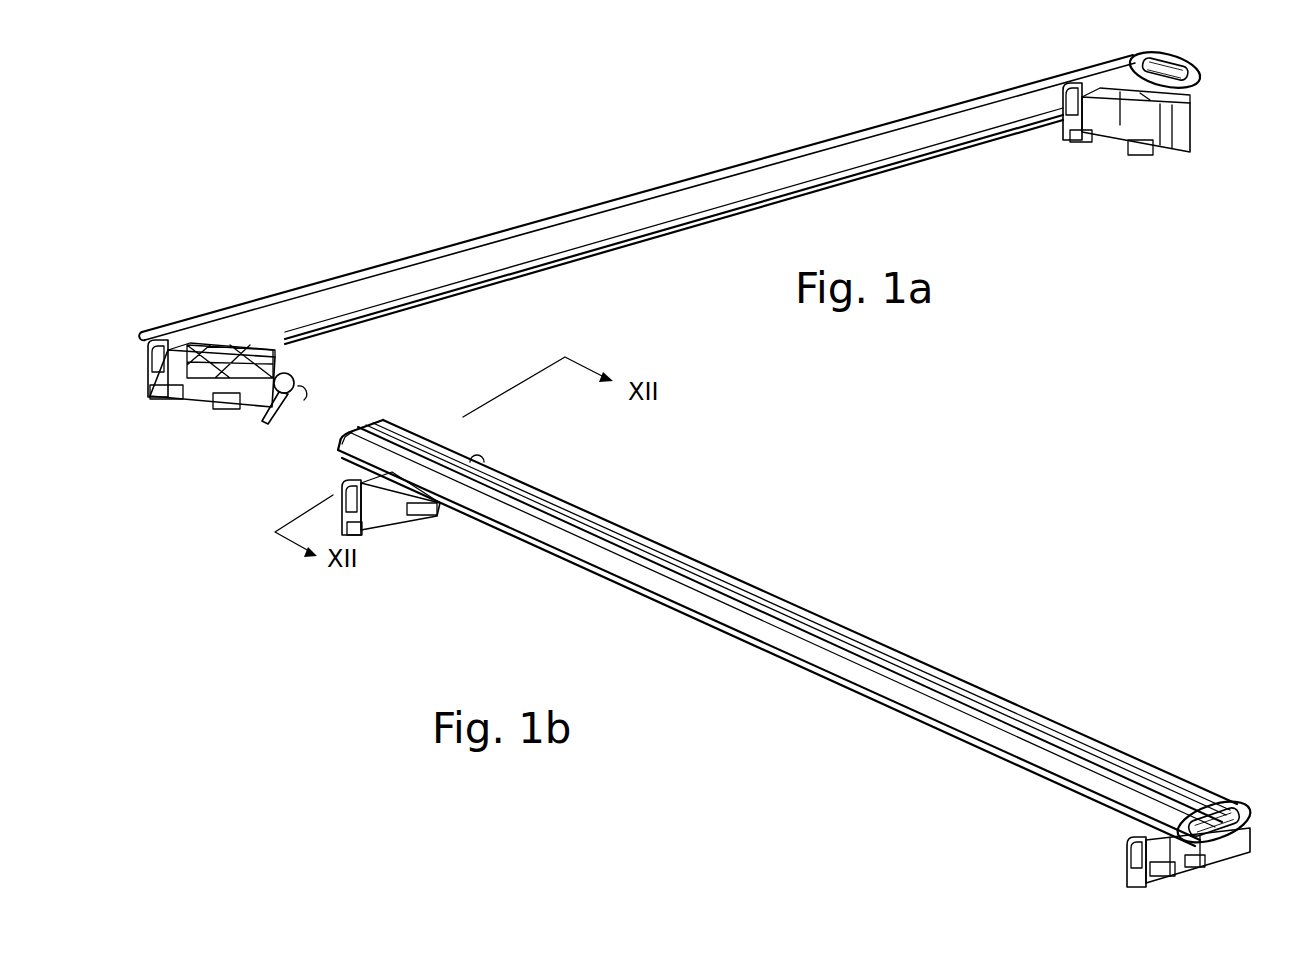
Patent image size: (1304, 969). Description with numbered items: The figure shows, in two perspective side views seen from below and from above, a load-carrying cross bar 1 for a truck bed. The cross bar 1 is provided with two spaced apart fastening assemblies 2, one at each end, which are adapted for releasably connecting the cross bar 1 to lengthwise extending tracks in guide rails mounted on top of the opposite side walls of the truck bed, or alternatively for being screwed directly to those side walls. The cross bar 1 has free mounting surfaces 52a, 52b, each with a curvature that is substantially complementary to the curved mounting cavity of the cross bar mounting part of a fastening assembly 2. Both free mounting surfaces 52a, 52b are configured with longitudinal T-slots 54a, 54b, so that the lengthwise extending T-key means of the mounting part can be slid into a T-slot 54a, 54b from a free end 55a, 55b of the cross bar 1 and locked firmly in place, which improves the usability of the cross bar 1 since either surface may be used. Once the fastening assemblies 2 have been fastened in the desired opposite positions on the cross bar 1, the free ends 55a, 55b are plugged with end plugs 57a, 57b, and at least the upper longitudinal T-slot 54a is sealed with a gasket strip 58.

In FIG. 1a, the load-carrying cross bar 1 is at (640, 148).
In FIG. 1b, the load-carrying cross bar 1 is at (912, 560).
In FIG. 1a, the fastening assembly 2 is at (1087, 174).
In FIG. 1b, the fastening assembly 2 is at (386, 536).
In FIG. 1b, the free mounting surface 52a is at (705, 605).
In FIG. 1a, the free mounting surface 52b is at (525, 247).
In FIG. 1b, the longitudinal mounting slot 54a is at (600, 527).
In FIG. 1a, the longitudinal mounting slot 54b is at (675, 240).
In FIG. 1b, the free end of the cross bar 55a is at (1237, 792).
In FIG. 1b, the free end of the cross bar 55b is at (338, 462).
In FIG. 1a, the end plug 57a is at (1190, 58).
In FIG. 1b, the end plug 57a is at (1228, 835).
In FIG. 1b, the end plug 57b is at (357, 428).
In FIG. 1b, the gasket strip 58 is at (790, 605).